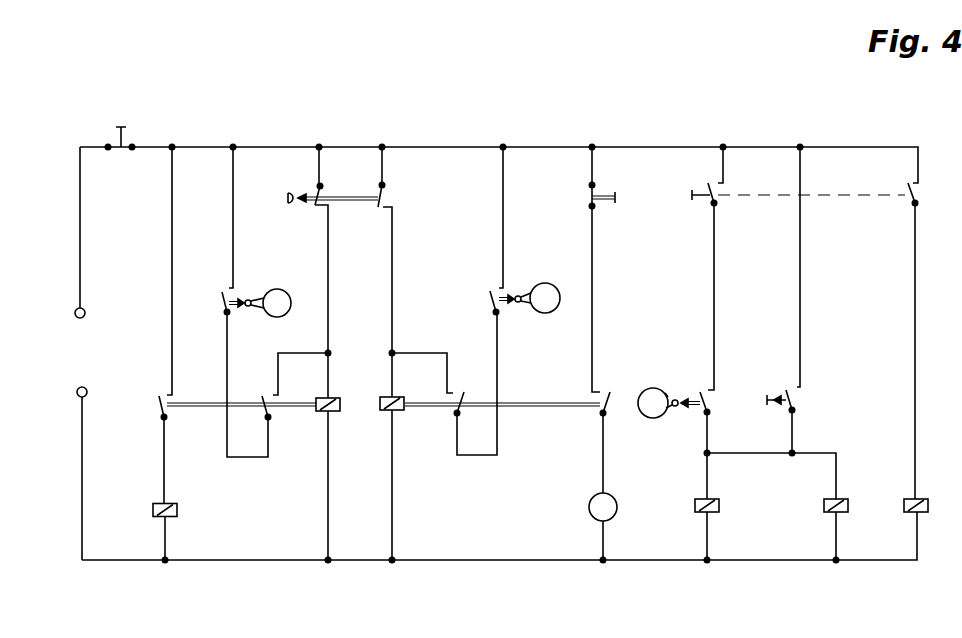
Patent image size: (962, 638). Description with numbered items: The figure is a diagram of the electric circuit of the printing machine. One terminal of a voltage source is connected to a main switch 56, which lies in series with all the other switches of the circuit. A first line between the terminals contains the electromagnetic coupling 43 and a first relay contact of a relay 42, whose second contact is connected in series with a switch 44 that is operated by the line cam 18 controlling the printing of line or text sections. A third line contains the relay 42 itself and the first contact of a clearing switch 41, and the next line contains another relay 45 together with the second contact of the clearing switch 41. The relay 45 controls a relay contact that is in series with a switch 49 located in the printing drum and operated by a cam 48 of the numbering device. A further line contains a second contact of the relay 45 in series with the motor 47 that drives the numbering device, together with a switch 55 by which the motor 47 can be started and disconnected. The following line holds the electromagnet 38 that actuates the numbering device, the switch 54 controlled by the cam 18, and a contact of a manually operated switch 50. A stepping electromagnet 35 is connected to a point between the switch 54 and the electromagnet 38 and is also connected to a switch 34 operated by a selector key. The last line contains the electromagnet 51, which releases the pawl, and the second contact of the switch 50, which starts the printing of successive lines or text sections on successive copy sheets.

The line cam 18 is at (271, 294).
The switch 34 is at (805, 400).
The stepping electromagnet 35 is at (848, 499).
The electromagnet 38 is at (719, 499).
The clearing switch 41 is at (288, 196).
The relay 42 is at (337, 394).
The electromagnetic coupling 43 is at (178, 503).
The switch 44 is at (223, 299).
The relay 45 is at (402, 391).
The motor 47 is at (618, 493).
The cam 48 is at (548, 292).
The switch 49 is at (492, 300).
The manually operated switch 50 is at (690, 193).
The electromagnet 51 is at (928, 499).
The switch 54 is at (681, 393).
The switch 55 is at (618, 195).
The main switch 56 is at (119, 150).